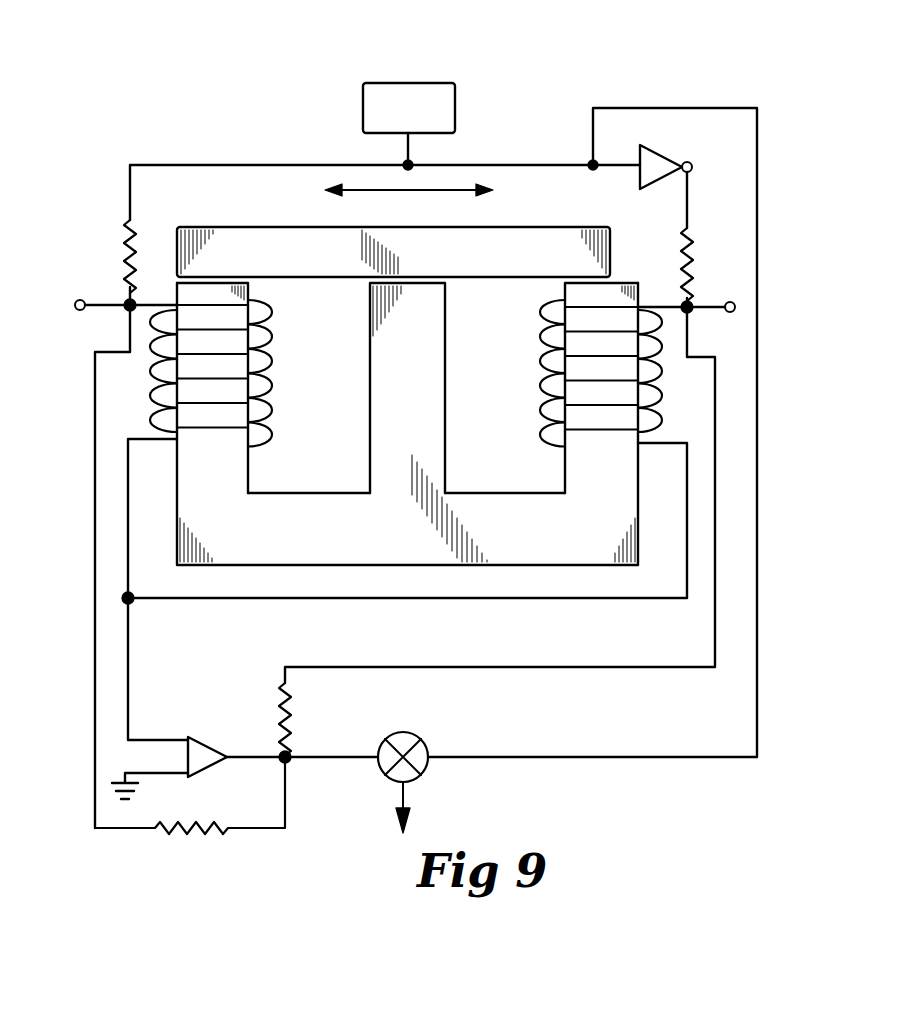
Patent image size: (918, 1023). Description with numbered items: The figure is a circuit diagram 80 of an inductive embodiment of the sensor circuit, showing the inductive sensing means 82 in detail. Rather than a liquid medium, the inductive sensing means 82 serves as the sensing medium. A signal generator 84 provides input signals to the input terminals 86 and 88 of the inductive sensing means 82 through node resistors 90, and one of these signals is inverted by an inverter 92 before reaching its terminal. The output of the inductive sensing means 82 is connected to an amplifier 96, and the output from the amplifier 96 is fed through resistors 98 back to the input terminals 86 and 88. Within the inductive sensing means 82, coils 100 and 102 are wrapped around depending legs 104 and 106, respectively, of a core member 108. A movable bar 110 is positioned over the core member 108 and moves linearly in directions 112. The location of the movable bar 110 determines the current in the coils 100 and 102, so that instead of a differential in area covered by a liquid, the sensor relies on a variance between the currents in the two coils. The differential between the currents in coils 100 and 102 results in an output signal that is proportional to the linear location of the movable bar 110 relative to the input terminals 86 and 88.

The circuit diagram 80 is at (154, 118).
The inductive sensing means 82 is at (232, 214).
The signal generator 84 is at (388, 82).
The input terminal 86 is at (126, 303).
The input terminal 88 is at (690, 304).
The node resistor 90 is at (116, 232).
The inverter 92 is at (662, 148).
The amplifier 96 is at (202, 736).
The resistor 98 is at (296, 714).
The coil 100 is at (270, 334).
The coil 102 is at (540, 312).
The depending leg 104 is at (235, 471).
The depending leg 106 is at (572, 463).
The core member 108 is at (344, 478).
The movable bar 110 is at (504, 226).
The directions 112 is at (394, 196).